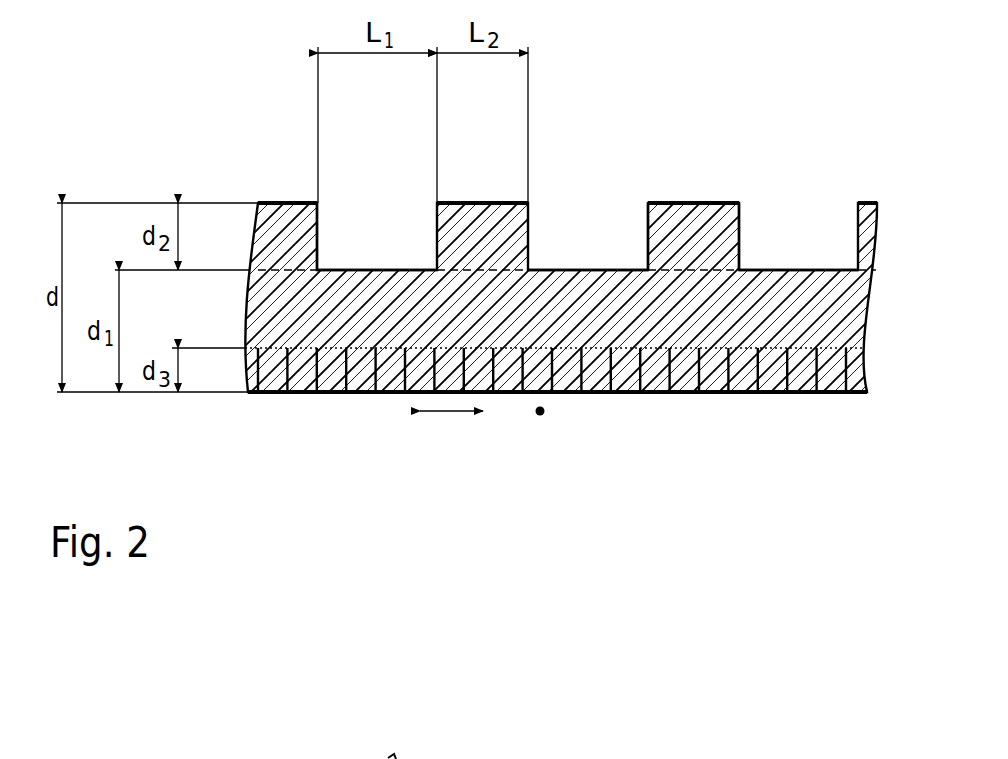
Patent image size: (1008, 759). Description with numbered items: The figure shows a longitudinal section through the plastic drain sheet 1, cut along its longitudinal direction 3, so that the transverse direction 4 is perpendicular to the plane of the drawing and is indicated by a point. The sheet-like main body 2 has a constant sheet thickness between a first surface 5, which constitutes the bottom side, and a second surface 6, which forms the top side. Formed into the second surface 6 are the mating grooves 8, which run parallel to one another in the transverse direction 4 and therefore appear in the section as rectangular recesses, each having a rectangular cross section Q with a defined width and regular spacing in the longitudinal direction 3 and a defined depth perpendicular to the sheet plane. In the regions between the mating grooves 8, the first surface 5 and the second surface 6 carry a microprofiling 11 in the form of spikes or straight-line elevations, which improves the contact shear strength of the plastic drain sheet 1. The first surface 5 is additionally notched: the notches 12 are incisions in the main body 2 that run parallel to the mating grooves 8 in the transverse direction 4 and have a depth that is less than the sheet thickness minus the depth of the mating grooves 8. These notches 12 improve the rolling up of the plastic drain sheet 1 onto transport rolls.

The plastic drain sheet 1 is at (721, 127).
The main body 2 is at (290, 202).
The cross section Q is at (320, 223).
The mating grooves 8 is at (385, 243).
The second surface 6 is at (690, 201).
The microprofiling 11 is at (500, 203).
The first surface 5 is at (617, 396).
The notches 12 is at (714, 395).
The longitudinal direction 3 is at (453, 413).
The transverse direction 4 is at (540, 418).